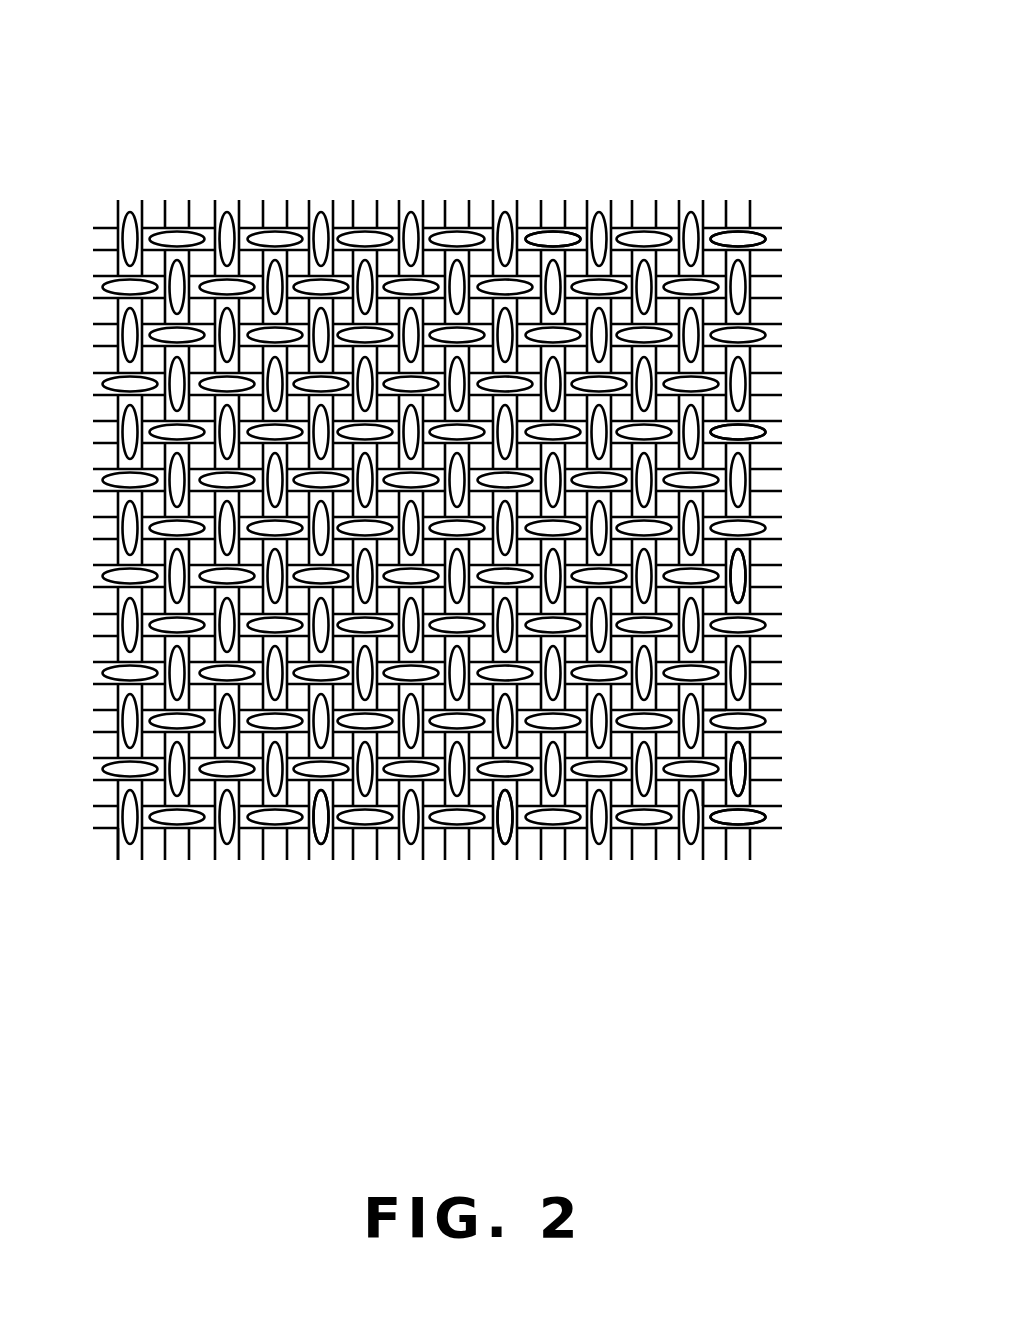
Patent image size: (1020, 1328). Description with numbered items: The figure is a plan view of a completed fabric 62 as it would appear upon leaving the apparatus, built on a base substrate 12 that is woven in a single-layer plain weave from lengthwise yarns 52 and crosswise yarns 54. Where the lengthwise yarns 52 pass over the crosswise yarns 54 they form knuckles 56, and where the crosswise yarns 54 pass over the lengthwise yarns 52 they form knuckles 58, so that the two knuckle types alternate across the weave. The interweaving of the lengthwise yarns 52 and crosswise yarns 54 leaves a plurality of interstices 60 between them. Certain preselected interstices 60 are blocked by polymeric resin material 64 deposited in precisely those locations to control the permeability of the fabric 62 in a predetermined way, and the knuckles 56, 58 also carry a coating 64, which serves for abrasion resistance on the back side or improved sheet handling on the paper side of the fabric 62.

The base substrate 12 is at (212, 128).
The lengthwise yarns 52 is at (327, 835).
The crosswise yarns 54 is at (753, 240).
The knuckles 56 is at (748, 570).
The knuckles 58 is at (550, 233).
The interstices 60 is at (712, 793).
The fabric 62 is at (715, 705).
The polymeric resin material 64 is at (750, 765).